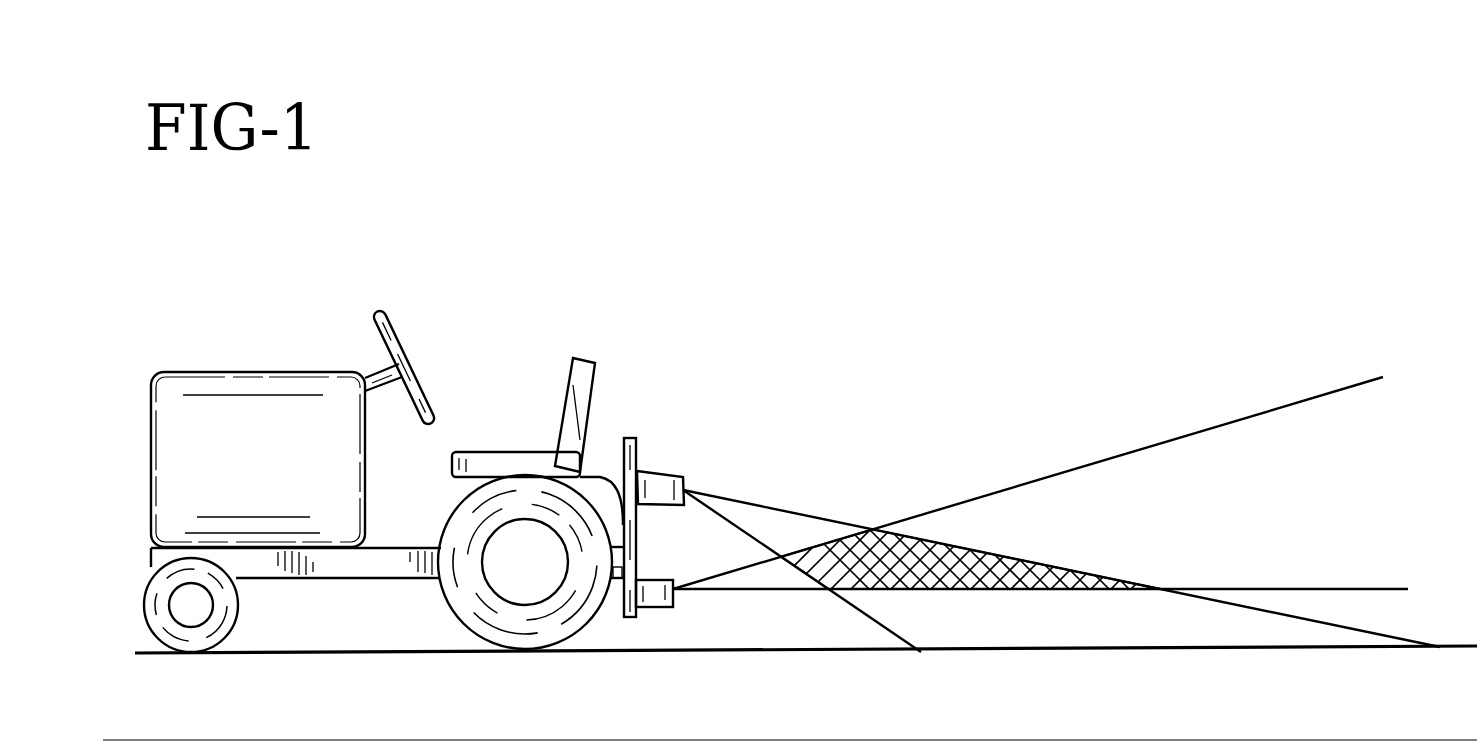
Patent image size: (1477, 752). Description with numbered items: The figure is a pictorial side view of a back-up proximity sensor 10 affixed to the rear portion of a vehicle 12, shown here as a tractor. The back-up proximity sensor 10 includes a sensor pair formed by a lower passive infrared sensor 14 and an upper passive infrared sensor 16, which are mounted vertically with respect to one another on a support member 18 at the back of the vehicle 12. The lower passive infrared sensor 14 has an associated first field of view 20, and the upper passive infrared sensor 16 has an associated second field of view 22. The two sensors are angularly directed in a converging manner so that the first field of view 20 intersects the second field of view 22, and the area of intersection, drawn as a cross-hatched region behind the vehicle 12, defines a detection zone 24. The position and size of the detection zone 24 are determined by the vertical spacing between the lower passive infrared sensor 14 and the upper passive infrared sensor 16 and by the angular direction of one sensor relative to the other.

The back-up proximity sensor 10 is at (707, 519).
The vehicle 12 is at (255, 365).
The lower passive infrared sensor 14 is at (658, 607).
The upper passive infrared sensor 16 is at (662, 482).
The support member 18 is at (638, 440).
The first field of view 20 is at (763, 592).
The second field of view 22 is at (758, 503).
The detection zone 24 is at (967, 552).